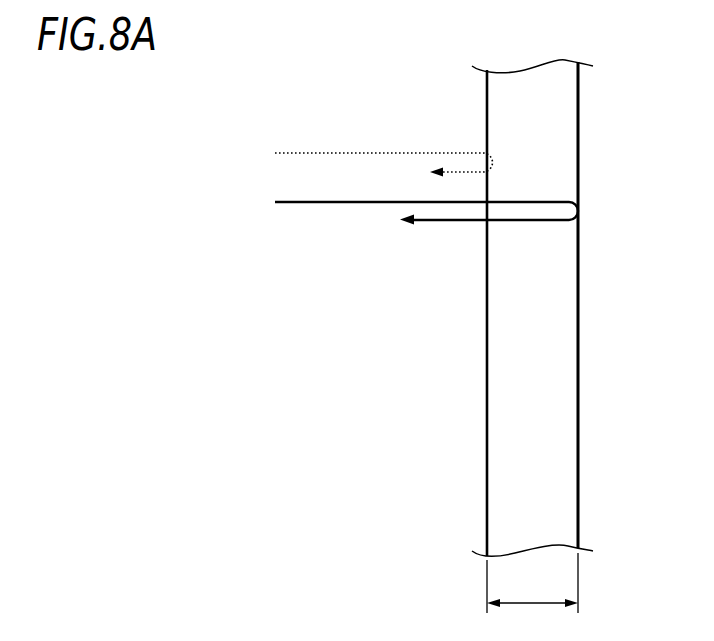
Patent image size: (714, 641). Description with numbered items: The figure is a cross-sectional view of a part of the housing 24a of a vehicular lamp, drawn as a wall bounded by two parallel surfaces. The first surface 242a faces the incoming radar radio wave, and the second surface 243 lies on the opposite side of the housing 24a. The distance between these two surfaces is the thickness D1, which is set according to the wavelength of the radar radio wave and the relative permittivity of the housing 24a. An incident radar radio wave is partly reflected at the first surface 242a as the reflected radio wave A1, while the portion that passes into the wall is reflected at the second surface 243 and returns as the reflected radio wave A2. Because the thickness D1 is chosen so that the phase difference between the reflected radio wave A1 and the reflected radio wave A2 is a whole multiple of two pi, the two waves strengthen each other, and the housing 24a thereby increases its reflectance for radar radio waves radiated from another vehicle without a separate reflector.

The housing 24a is at (565, 103).
The second surface 243 is at (579, 274).
The first surface 242a is at (486, 315).
The reflected radio wave A1 is at (456, 150).
The reflected radio wave A2 is at (453, 224).
The thickness D1 is at (532, 593).